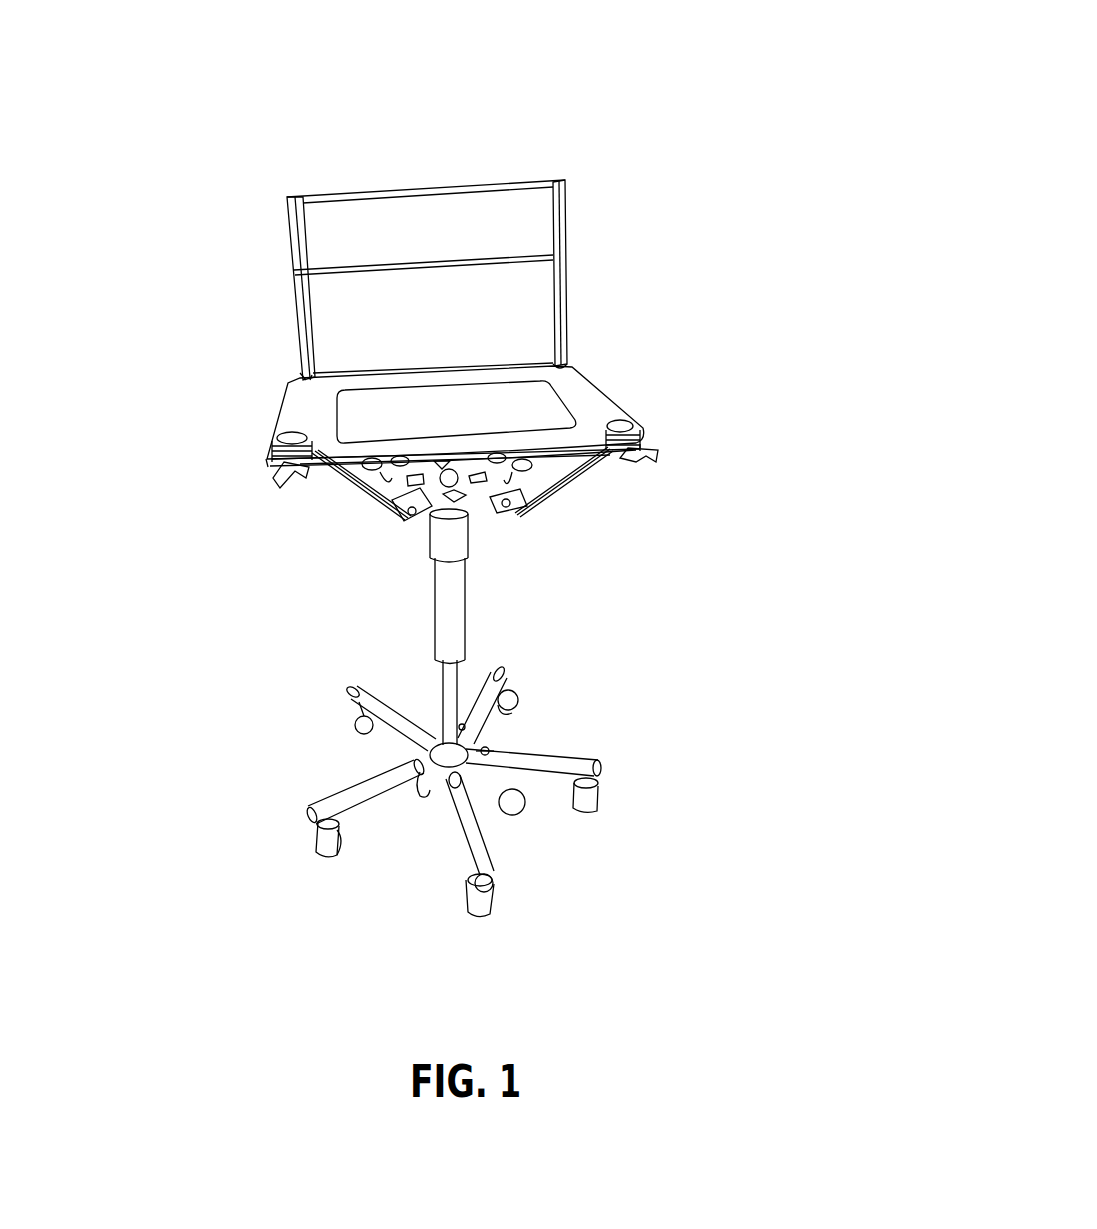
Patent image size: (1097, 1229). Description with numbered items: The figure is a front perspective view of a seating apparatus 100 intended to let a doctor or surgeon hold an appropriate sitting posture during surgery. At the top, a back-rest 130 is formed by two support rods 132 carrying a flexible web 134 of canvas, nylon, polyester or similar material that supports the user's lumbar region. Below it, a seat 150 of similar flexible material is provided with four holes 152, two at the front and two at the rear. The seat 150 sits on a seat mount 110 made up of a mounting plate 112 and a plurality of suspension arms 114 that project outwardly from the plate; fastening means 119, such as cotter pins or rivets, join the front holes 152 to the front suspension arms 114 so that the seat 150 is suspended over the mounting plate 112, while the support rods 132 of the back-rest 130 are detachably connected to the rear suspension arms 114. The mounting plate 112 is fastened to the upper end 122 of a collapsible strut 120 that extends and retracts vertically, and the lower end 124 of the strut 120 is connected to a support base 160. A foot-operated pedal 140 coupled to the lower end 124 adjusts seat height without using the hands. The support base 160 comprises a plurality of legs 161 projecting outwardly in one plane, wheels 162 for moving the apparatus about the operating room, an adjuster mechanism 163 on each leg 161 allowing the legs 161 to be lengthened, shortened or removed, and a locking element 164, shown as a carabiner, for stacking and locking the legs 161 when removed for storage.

The seating apparatus 100 is at (632, 129).
The seat mount 110 is at (496, 480).
The mounting plate 112 is at (475, 493).
The suspension arms 114 is at (357, 498).
The fastening means 119 is at (282, 464).
The strut 120 is at (447, 622).
The upper end 122 is at (443, 482).
The lower end 124 is at (468, 743).
The back-rest 130 is at (345, 254).
The support rods 132 is at (307, 333).
The flexible web 134 is at (407, 215).
The pedal 140 is at (517, 803).
The seat 150 is at (572, 403).
The holes 152 is at (310, 379).
The support base 160 is at (444, 749).
The legs 161 is at (358, 789).
The wheels 162 is at (328, 840).
The adjuster mechanism 163 is at (418, 762).
The locking element 164 is at (424, 766).